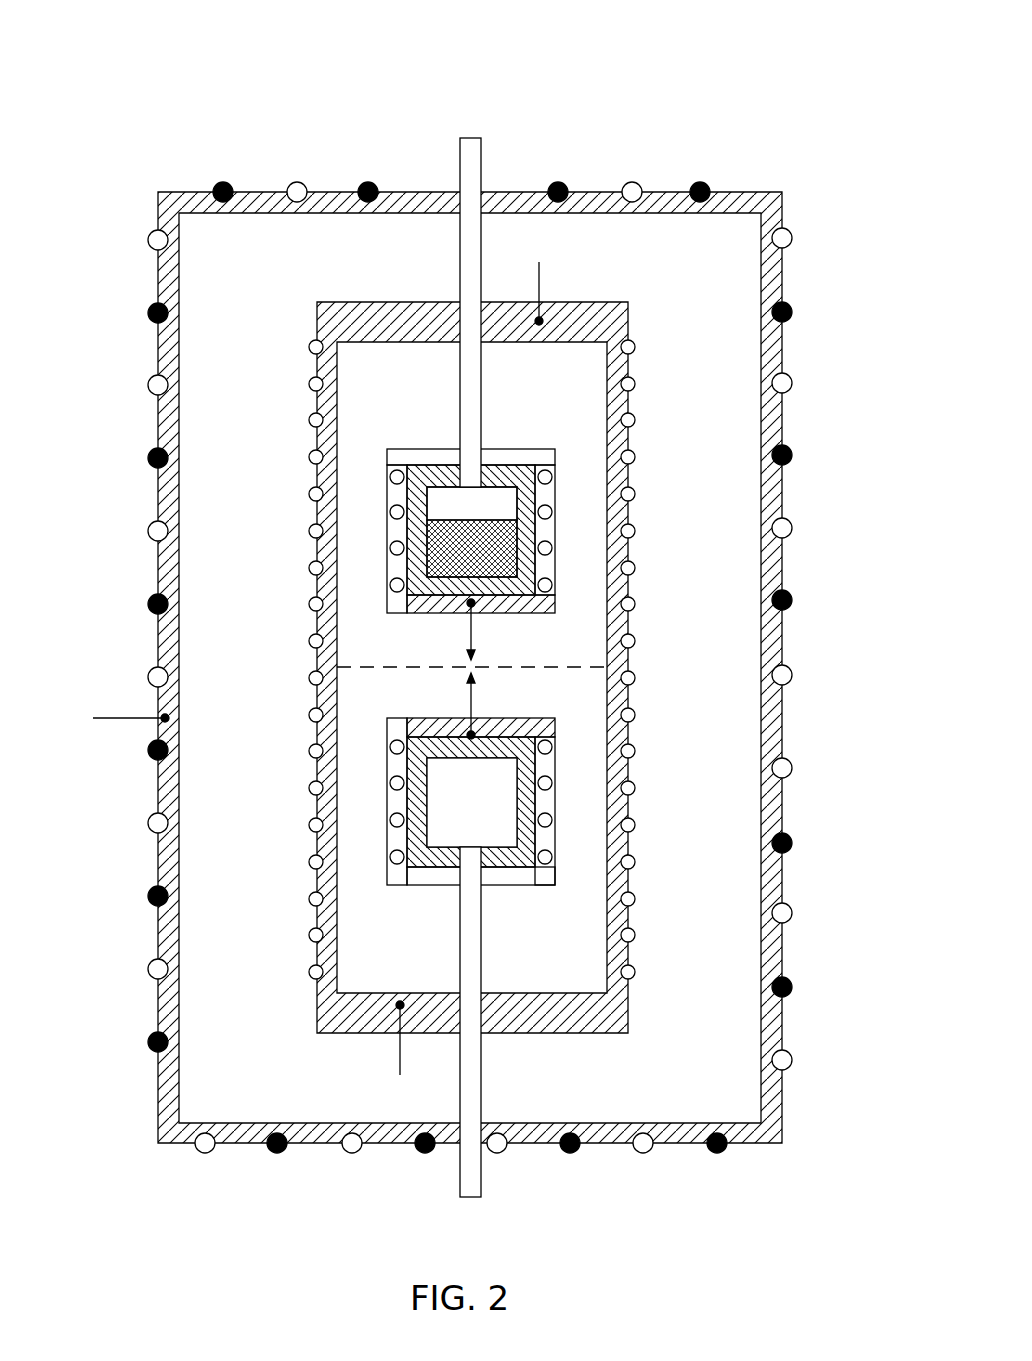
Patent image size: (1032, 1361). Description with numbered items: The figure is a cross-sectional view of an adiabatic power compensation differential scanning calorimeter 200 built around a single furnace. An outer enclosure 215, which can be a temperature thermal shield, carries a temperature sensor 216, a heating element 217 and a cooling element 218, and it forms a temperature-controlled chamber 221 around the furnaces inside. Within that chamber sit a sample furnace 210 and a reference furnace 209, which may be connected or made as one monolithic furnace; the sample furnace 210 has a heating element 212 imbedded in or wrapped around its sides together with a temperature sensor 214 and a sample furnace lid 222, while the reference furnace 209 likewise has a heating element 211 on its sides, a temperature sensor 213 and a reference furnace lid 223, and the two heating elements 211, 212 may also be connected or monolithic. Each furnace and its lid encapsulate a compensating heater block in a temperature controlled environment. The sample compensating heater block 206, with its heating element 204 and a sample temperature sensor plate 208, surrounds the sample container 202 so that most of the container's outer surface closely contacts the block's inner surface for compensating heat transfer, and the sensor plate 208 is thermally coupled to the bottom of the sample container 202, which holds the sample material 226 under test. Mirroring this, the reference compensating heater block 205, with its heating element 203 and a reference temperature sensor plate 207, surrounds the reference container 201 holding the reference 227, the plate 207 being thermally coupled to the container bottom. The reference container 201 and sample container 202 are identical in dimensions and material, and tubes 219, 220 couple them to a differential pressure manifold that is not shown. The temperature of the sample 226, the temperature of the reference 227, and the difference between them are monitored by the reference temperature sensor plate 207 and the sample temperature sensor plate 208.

The adiabatic power compensation differential scanning calorimeter 200 is at (484, 86).
The reference container 201 is at (553, 745).
The sample container 202 is at (557, 597).
The heating element 203 is at (390, 832).
The heating element 204 is at (378, 507).
The reference compensating heater block 205 is at (560, 883).
The sample compensating heater block 206 is at (553, 457).
The reference temperature sensor plate 207 is at (470, 725).
The sample temperature sensor plate 208 is at (470, 615).
The reference furnace 209 is at (316, 820).
The sample furnace 210 is at (316, 400).
The heating element 211 is at (636, 862).
The heating element 212 is at (638, 462).
The temperature sensor 213 is at (400, 1037).
The temperature sensor 214 is at (545, 320).
The enclosure 215 is at (170, 857).
The temperature sensor 216 is at (160, 700).
The heating element 217 is at (792, 768).
The cooling element 218 is at (792, 313).
The tube 219 is at (481, 1068).
The tube 220 is at (462, 270).
The temperature-controlled chamber 221 is at (222, 580).
The sample furnace lid 222 is at (347, 323).
The reference furnace lid 223 is at (596, 1033).
The sample material 226 is at (496, 530).
The reference 227 is at (487, 793).